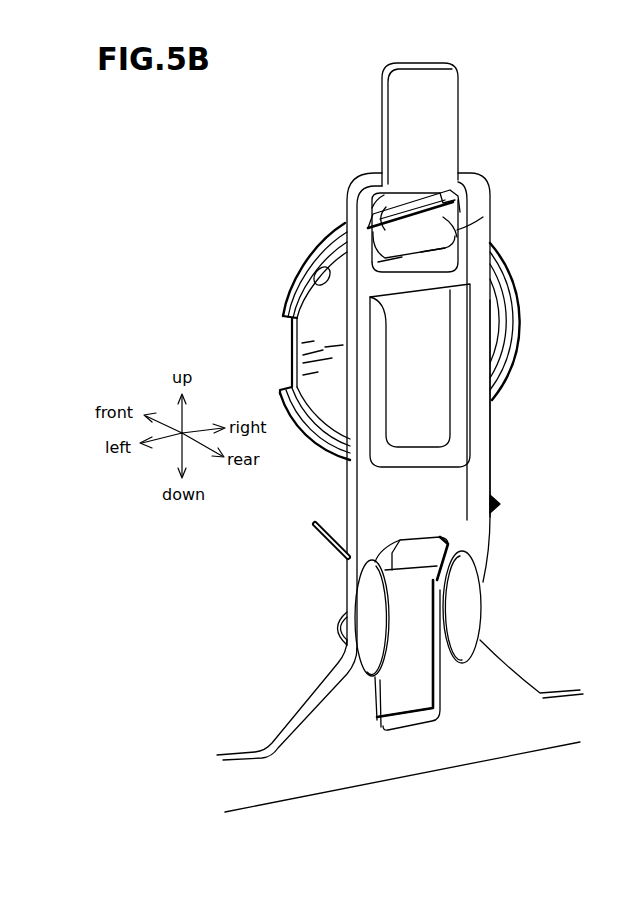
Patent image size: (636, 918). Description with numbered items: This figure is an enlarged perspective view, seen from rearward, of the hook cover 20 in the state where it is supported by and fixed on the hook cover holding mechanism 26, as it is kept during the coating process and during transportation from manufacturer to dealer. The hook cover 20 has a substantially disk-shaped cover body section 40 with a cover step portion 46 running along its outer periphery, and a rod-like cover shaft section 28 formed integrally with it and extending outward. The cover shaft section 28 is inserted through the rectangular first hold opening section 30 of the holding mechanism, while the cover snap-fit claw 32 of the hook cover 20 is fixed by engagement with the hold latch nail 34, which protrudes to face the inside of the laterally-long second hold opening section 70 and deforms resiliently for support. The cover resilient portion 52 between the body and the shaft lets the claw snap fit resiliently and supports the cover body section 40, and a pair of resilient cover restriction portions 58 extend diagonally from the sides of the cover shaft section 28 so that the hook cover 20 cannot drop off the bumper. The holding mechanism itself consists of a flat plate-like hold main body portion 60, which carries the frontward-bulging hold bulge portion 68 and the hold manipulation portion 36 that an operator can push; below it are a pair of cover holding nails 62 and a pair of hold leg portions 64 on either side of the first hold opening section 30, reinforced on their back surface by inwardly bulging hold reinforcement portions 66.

The hook cover 20 is at (276, 344).
The hook cover holding mechanism 26 is at (528, 155).
The cover shaft section 28 is at (408, 668).
The first hold opening section 30 is at (377, 690).
The cover snap-fit claw 32 is at (445, 233).
The hold latch nail 34 is at (458, 194).
The hold manipulation portion 36 is at (380, 128).
The cover body section 40 is at (522, 313).
The cover step portion 46 is at (318, 284).
The cover resilient portion 52 is at (422, 551).
The cover restriction portions 58 is at (501, 504).
The hold main body portion 60 is at (496, 457).
The cover holding nails 62 is at (333, 616).
The hold leg portions 64 is at (343, 590).
The hold reinforcement portions 66 is at (387, 623).
The hold bulge portion 68 is at (425, 390).
The second hold opening section 70 is at (372, 212).